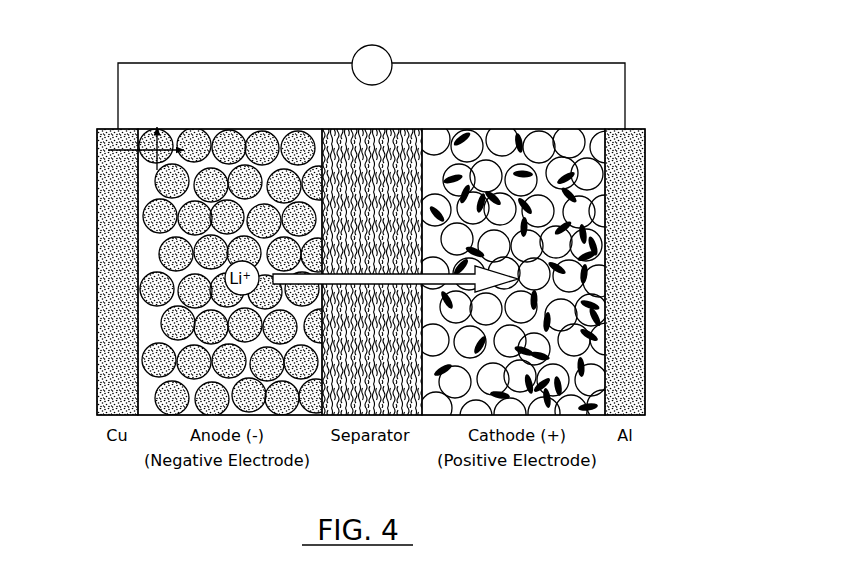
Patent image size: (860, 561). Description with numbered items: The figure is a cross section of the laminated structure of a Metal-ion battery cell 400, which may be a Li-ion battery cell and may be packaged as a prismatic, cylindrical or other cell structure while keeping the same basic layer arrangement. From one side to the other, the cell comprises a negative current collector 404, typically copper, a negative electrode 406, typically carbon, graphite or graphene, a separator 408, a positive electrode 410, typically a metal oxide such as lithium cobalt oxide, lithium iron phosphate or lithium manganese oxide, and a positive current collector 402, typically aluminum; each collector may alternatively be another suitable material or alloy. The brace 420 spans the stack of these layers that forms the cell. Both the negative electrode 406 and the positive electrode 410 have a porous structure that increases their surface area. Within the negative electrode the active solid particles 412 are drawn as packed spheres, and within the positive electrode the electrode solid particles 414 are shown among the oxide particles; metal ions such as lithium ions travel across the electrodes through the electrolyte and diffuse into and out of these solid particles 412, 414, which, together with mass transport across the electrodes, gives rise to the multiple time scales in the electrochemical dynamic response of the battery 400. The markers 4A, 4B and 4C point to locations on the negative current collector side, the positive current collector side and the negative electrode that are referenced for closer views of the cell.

The Metal-ion battery cell 400 is at (668, 90).
The positive current collector 402 is at (645, 218).
The negative current collector 404 is at (97, 228).
The negative electrode 406 is at (137, 118).
The separator 408 is at (322, 118).
The positive electrode 410 is at (422, 118).
The active solid particles 412 is at (142, 222).
The electrode solid particles 414 is at (594, 240).
The electrochemical cell 420 is at (603, 477).
The detail view 4A is at (139, 136).
The detail view 4B is at (601, 199).
The detail view 4C is at (161, 373).